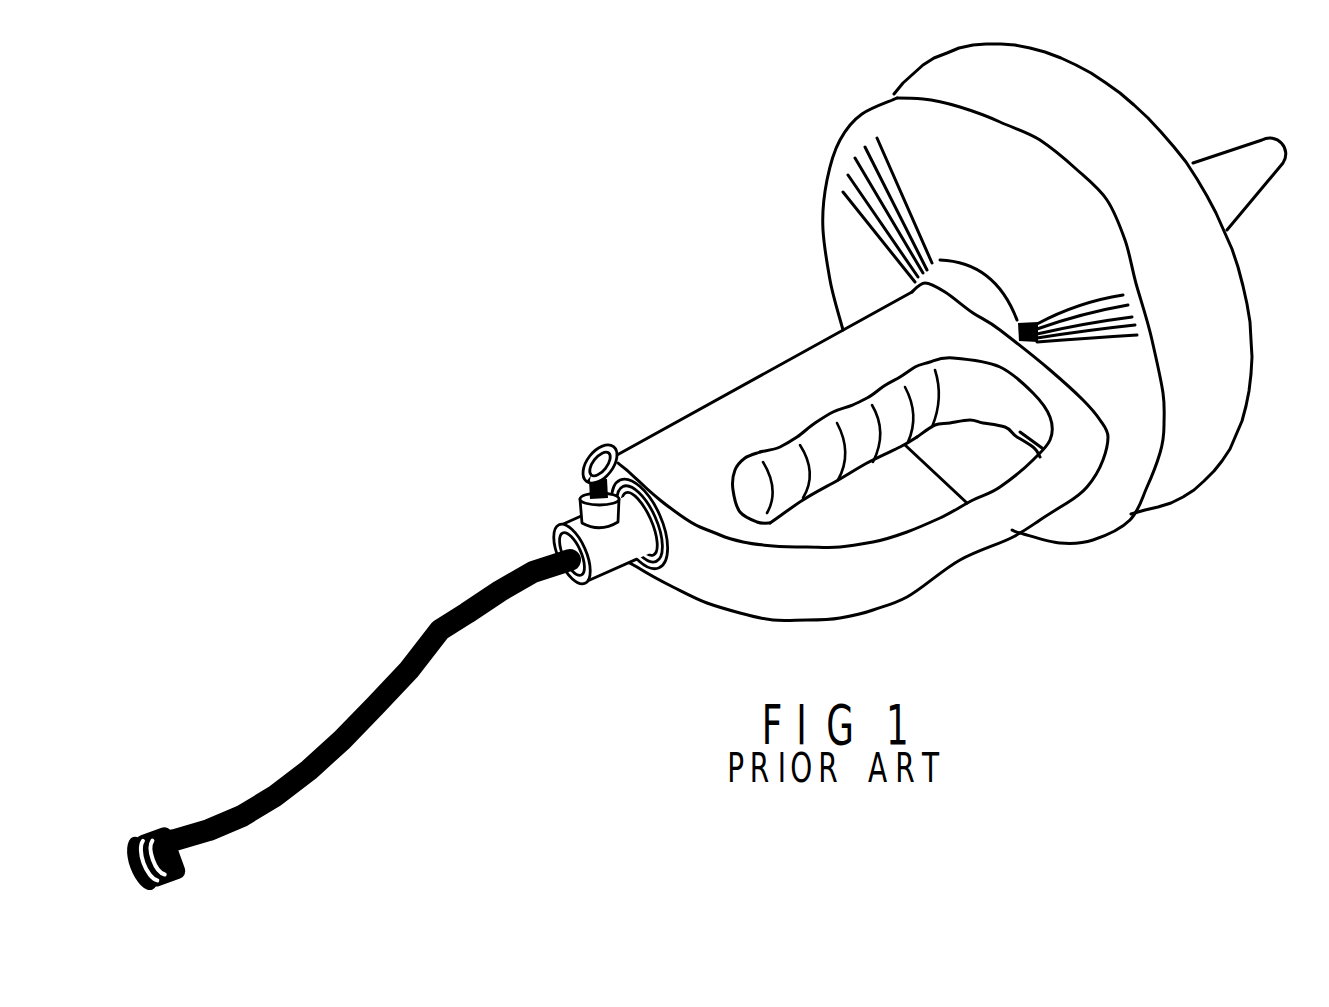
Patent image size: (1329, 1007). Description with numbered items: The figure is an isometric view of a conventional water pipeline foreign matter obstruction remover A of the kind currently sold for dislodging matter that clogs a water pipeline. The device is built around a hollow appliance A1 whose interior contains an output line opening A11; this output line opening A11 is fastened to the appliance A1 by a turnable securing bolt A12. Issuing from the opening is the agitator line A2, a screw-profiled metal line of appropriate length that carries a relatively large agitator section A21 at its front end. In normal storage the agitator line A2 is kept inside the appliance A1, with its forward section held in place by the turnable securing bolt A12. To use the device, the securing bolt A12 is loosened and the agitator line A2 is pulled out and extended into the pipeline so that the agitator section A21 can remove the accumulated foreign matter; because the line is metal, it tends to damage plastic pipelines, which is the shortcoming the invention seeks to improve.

The water pipeline foreign matter obstruction remover A is at (390, 492).
The appliance A1 is at (755, 405).
The output line opening A11 is at (580, 577).
The turnable securing bolt A12 is at (592, 452).
The agitator line A2 is at (397, 667).
The agitator section A21 is at (139, 835).